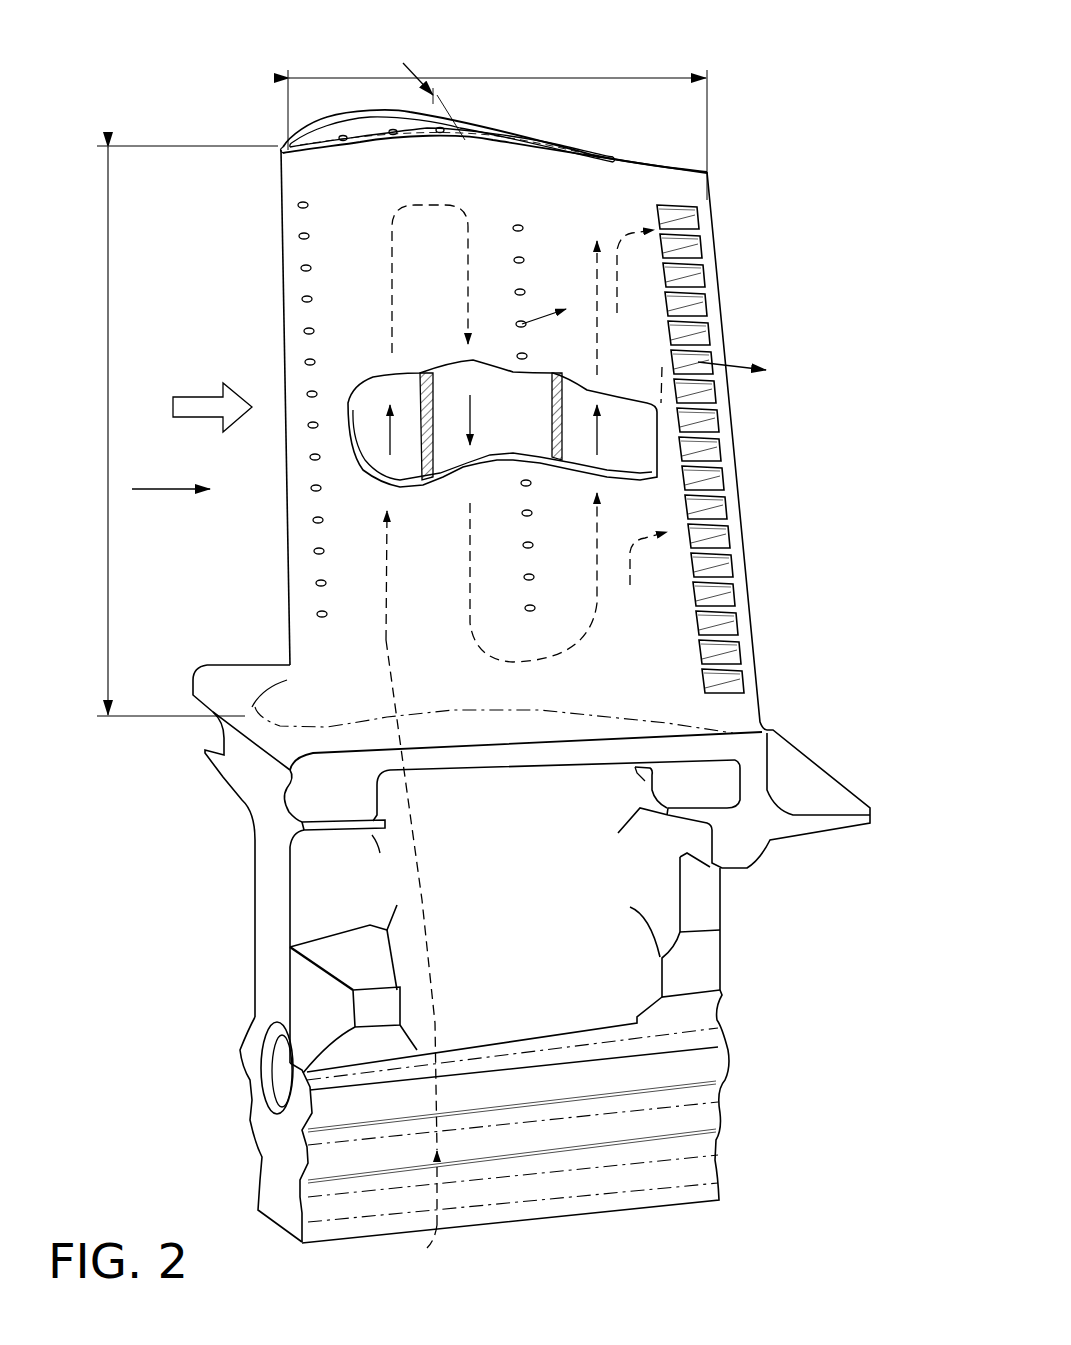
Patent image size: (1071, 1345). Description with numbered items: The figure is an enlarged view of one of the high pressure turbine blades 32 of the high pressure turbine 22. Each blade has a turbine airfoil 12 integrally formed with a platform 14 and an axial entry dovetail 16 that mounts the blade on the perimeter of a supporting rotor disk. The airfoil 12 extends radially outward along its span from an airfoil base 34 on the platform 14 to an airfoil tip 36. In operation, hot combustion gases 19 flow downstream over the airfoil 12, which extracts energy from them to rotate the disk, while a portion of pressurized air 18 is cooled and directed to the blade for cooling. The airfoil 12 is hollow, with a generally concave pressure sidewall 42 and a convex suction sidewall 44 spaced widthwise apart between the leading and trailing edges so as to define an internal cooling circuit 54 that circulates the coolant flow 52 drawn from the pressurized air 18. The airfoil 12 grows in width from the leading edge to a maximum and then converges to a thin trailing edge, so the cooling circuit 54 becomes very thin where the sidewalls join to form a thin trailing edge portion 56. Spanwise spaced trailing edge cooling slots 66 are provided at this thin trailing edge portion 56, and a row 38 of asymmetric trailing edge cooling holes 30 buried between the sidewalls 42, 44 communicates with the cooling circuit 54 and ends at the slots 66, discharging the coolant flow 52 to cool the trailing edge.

The turbine airfoil 12 is at (280, 162).
The platform 14 is at (207, 665).
The axial entry dovetail 16 is at (240, 1053).
The pressurized air 18 is at (393, 1260).
The hot combustion gases 19 is at (198, 397).
The high pressure turbine 22 is at (638, 63).
The trailing edge cooling holes 30 is at (707, 327).
The high pressure turbine blades 32 is at (753, 143).
The airfoil base 34 is at (450, 710).
The airfoil tip 36 is at (625, 150).
The row of trailing edge cooling holes 38 is at (682, 198).
The pressure sidewall 42 is at (570, 238).
The suction sidewall 44 is at (320, 258).
The coolant flow 52 is at (722, 360).
The internal cooling circuit 54 is at (531, 441).
The thin trailing edge portion 56 is at (642, 153).
The trailing edge cooling slots 66 is at (677, 278).